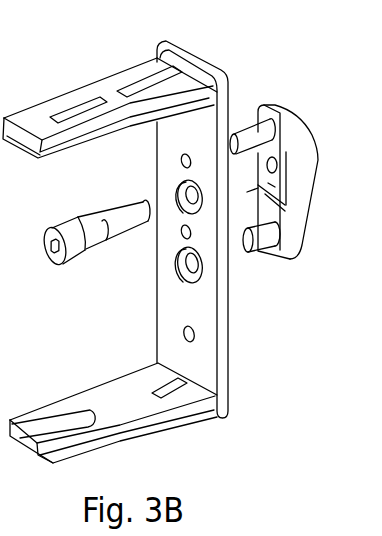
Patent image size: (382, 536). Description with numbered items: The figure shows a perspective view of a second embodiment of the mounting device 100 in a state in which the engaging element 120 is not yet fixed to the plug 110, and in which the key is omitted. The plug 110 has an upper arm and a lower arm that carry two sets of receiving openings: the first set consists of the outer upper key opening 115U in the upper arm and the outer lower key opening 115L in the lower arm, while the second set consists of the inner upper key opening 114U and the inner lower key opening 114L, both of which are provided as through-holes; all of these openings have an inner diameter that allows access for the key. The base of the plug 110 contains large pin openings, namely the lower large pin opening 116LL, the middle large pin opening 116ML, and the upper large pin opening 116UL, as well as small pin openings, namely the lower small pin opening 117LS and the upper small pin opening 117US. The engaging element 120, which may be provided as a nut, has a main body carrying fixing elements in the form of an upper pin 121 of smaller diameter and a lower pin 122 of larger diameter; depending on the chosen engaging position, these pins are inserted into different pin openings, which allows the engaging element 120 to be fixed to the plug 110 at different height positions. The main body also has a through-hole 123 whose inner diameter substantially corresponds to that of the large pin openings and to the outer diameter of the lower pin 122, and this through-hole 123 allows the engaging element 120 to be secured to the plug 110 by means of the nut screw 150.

The mounting device 100 is at (284, 53).
The plug 110 is at (247, 332).
The inner upper key opening 114U is at (150, 86).
The inner lower key opening 114L is at (170, 390).
The outer upper key opening 115U is at (70, 110).
The outer lower key opening 115L is at (85, 425).
The upper large pin opening 116UL is at (179, 188).
The middle large pin opening 116ML is at (180, 275).
The lower large pin opening 116LL is at (183, 334).
The upper small pin opening 117US is at (181, 161).
The lower small pin opening 117LS is at (184, 236).
The engaging element 120 is at (318, 145).
The upper pin 121 is at (254, 130).
The lower pin 122 is at (257, 246).
The through-hole 123 is at (277, 167).
The nut screw 150 is at (97, 238).